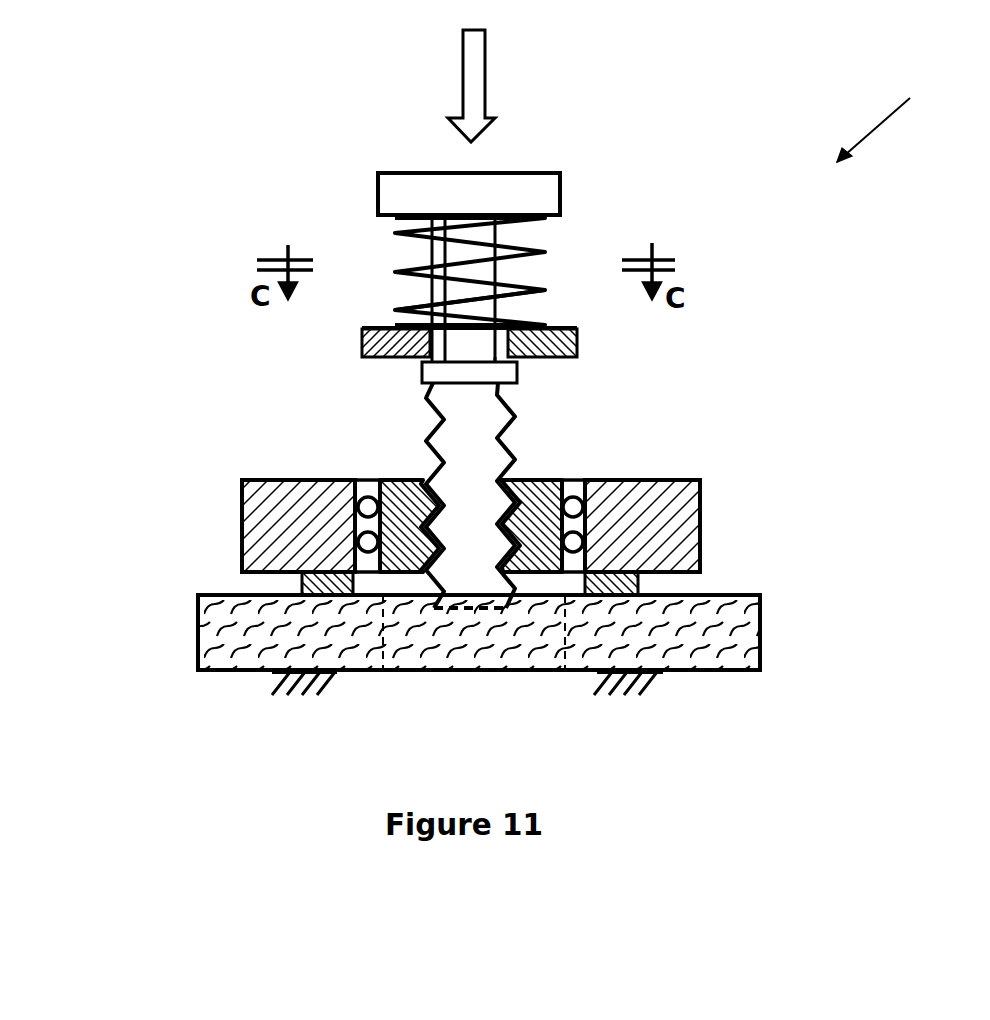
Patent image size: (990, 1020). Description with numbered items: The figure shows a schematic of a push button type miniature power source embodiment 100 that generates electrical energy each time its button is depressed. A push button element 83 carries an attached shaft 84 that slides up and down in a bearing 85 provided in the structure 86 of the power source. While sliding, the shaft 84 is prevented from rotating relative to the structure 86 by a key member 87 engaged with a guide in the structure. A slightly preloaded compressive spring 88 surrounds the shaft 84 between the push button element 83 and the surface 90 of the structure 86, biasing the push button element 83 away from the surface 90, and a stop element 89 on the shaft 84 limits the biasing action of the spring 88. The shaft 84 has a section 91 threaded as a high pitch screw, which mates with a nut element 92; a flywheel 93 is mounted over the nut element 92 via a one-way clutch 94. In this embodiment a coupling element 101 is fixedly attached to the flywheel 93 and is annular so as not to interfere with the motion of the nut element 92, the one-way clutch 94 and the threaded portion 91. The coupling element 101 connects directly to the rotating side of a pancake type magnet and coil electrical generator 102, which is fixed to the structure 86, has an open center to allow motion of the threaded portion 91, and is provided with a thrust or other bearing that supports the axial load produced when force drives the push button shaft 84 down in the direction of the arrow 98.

The push button element 83 is at (463, 196).
The shaft 84 is at (463, 247).
The bearing 85 is at (502, 350).
The structure 86 is at (377, 342).
The key member 87 is at (437, 250).
The compressive spring 88 is at (545, 290).
The stop element 89 is at (462, 372).
The surface 90 is at (387, 328).
The threaded section 91 is at (468, 432).
The nut element 92 is at (533, 517).
The flywheel 93 is at (272, 552).
The one-way clutch 94 is at (365, 523).
The arrow 98 is at (460, 86).
The power source embodiment 100 is at (908, 121).
The coupling element 101 is at (622, 580).
The pancake type magnet and coil electrical generator 102 is at (707, 635).